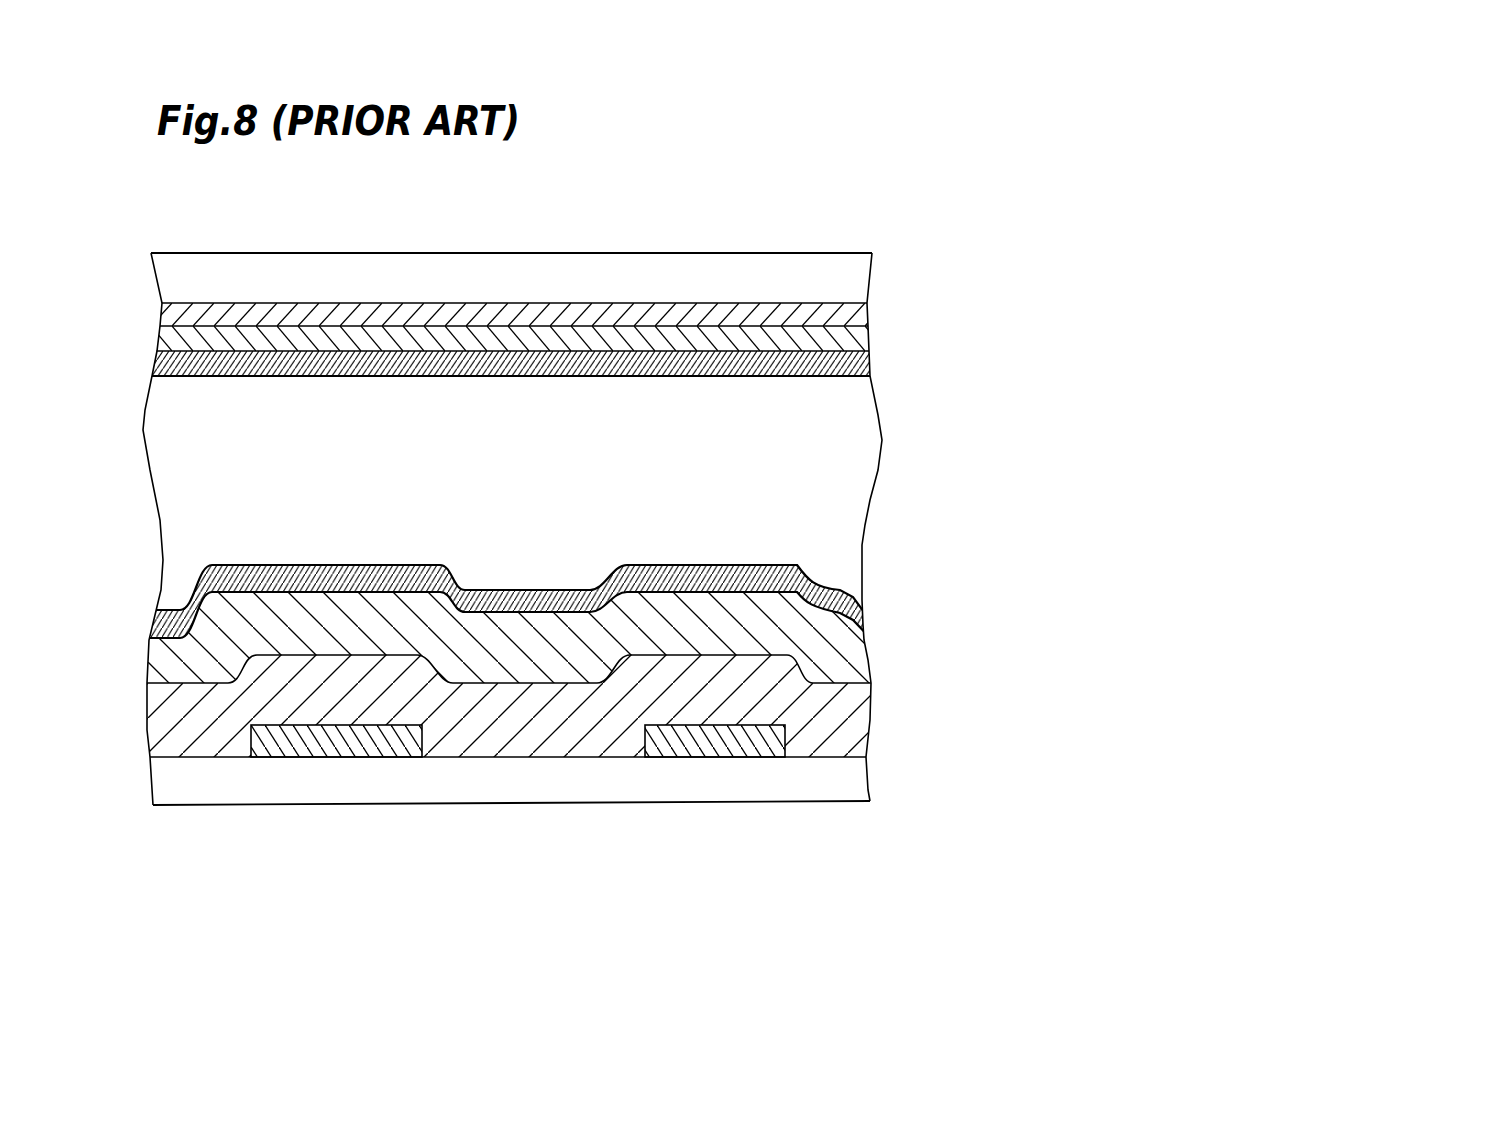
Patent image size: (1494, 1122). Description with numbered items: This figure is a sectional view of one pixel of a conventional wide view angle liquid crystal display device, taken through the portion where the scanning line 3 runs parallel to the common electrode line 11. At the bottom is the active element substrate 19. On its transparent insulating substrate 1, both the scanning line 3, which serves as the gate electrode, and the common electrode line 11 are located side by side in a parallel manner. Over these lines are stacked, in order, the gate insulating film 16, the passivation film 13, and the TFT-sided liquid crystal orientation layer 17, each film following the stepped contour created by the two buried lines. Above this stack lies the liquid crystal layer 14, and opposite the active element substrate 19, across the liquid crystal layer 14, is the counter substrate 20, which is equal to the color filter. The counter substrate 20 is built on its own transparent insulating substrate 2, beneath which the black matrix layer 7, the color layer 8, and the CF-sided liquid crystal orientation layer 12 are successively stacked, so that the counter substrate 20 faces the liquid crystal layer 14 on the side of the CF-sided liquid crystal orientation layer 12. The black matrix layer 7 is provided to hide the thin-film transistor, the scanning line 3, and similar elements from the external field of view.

The transparent insulating substrate 1 is at (843, 794).
The transparent insulating substrate 2 is at (587, 270).
The scanning line 3 is at (315, 737).
The black matrix layer 7 is at (865, 313).
The color layer 8 is at (862, 337).
The common electrode line 11 is at (680, 742).
The CF-sided liquid crystal orientation layer 12 is at (865, 367).
The passivation film 13 is at (857, 657).
The liquid crystal layer 14 is at (852, 525).
The gate insulating film 16 is at (855, 737).
The TFT-sided liquid crystal orientation layer 17 is at (870, 628).
The active element substrate 19 is at (805, 733).
The counter substrate 20 is at (814, 320).